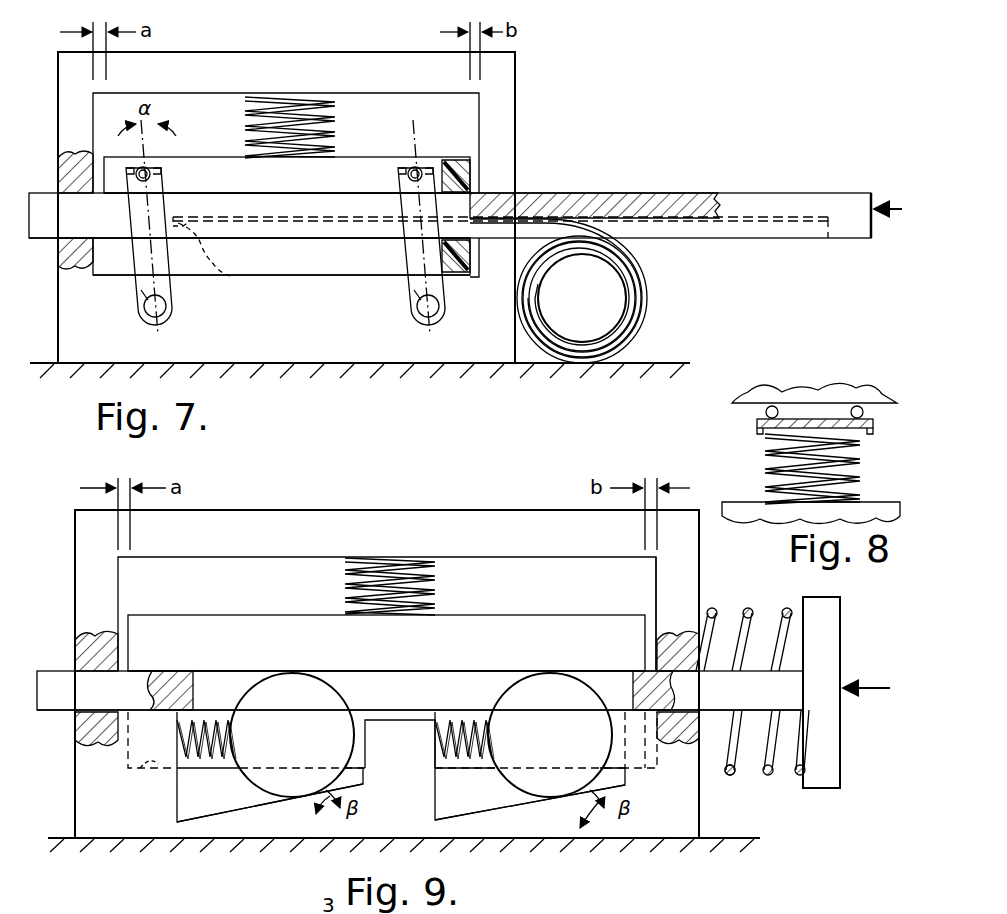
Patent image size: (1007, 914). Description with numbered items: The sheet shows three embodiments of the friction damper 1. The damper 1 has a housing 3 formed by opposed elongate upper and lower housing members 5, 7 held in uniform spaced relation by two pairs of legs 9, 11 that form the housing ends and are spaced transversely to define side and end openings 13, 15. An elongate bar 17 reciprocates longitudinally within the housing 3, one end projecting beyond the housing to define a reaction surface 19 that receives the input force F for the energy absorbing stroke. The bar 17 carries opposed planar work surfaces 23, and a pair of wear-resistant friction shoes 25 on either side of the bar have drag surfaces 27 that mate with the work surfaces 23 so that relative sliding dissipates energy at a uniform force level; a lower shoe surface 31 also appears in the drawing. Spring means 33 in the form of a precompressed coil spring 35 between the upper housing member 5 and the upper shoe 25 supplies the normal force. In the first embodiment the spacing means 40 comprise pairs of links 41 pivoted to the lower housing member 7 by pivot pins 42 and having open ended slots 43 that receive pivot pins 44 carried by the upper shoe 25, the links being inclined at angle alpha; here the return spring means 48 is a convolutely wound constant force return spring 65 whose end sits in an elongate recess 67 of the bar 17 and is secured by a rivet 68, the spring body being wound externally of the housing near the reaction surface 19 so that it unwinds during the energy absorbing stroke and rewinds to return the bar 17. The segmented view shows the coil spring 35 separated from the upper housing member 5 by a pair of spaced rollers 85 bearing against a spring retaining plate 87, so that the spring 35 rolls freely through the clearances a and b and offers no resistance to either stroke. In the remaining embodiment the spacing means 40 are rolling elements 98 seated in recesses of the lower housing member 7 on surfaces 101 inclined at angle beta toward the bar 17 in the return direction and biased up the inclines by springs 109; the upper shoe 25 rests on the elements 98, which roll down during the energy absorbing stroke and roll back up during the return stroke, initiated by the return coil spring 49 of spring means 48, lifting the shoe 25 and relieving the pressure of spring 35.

In FIG. 7, the damper 1 is at (575, 62).
In FIG. 9, the damper 1 is at (524, 480).
In FIG. 7, the housing 3 is at (258, 48).
In FIG. 9, the housing 3 is at (292, 506).
In FIG. 7, the upper housing member 5 is at (237, 86).
In FIG. 8, the upper housing member 5 is at (792, 398).
In FIG. 9, the upper housing member 5 is at (300, 541).
In FIG. 7, the lower housing member 7 is at (230, 336).
In FIG. 9, the lower housing member 7 is at (155, 816).
In FIG. 7, the legs 9 is at (58, 122).
In FIG. 9, the legs 9 is at (74, 584).
In FIG. 7, the legs 11 is at (515, 116).
In FIG. 9, the legs 11 is at (700, 572).
In FIG. 7, the side openings 13 is at (350, 98).
In FIG. 9, the side openings 13 is at (530, 581).
In FIG. 7, the end openings 15 is at (54, 190).
In FIG. 9, the end openings 15 is at (74, 668).
In FIG. 7, the bar 17 is at (740, 192).
In FIG. 9, the bar 17 is at (490, 688).
In FIG. 7, the reaction surface 19 is at (876, 238).
In FIG. 9, the reaction surface 19 is at (843, 746).
In FIG. 7, the work surfaces 23 is at (360, 225).
In FIG. 9, the work surfaces 23 is at (454, 672).
In FIG. 7, the friction shoes 25 is at (322, 187).
In FIG. 8, the friction shoes 25 is at (866, 502).
In FIG. 9, the friction shoes 25 is at (310, 661).
In FIG. 7, the drag surface 27 is at (172, 196).
In FIG. 9, the drag surface 27 is at (228, 682).
In FIG. 7, the lower plate surface 31 is at (358, 276).
In FIG. 9, the lower plate surface 31 is at (120, 776).
In FIG. 7, the spring means 33 is at (246, 130).
In FIG. 8, the spring means 33 is at (760, 443).
In FIG. 9, the spring means 33 is at (348, 598).
In FIG. 7, the coil spring 35 is at (338, 124).
In FIG. 8, the coil spring 35 is at (768, 474).
In FIG. 9, the coil spring 35 is at (436, 592).
In FIG. 7, the spacing means 40 is at (132, 283).
In FIG. 9, the spacing means 40 is at (272, 800).
In FIG. 7, the links 41 is at (156, 290).
In FIG. 7, the pivot pins 42 is at (166, 304).
In FIG. 7, the open ended slots 43 is at (154, 164).
In FIG. 7, the pivot pins 44 is at (140, 182).
In FIG. 7, the spring means 48 is at (652, 302).
In FIG. 9, the spring means 48 is at (771, 778).
In FIG. 9, the coil spring 49 is at (730, 774).
In FIG. 7, the constant force return spring 65 is at (654, 312).
In FIG. 7, the elongate recess 67 is at (648, 236).
In FIG. 7, the rivet 68 is at (212, 261).
In FIG. 8, the rollers 85 is at (735, 408).
In FIG. 8, the spring retaining plate 87 is at (872, 432).
In FIG. 9, the rolling elements 98 is at (300, 746).
In FIG. 9, the inclined surfaces 101 is at (222, 814).
In FIG. 9, the springs 109 is at (184, 758).